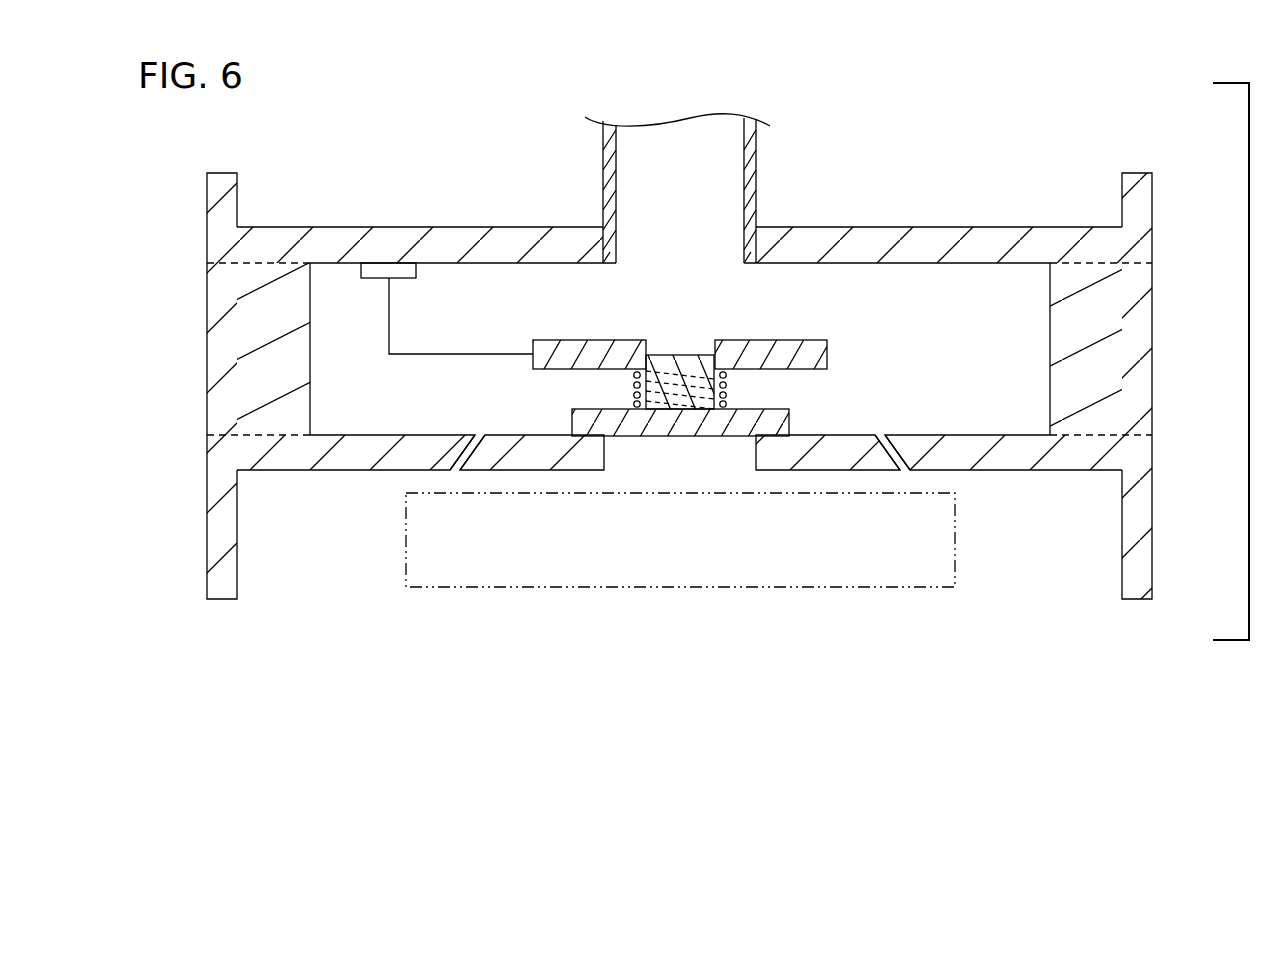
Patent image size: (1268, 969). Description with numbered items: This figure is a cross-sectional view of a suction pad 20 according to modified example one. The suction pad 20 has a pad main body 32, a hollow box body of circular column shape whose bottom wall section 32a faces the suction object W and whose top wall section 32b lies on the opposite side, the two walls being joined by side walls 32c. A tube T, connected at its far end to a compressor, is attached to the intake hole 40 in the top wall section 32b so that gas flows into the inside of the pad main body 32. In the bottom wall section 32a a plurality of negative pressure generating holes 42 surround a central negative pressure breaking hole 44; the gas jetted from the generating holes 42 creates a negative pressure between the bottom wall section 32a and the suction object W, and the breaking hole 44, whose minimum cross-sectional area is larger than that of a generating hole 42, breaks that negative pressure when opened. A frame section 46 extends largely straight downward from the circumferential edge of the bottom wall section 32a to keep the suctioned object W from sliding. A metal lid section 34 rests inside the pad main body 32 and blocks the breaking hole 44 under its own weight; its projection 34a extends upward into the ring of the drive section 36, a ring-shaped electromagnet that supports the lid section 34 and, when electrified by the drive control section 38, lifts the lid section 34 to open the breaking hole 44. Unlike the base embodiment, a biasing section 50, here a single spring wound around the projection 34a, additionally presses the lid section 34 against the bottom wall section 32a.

The suction pad 20 is at (434, 116).
The pad main body 32 is at (868, 212).
The bottom wall section 32a is at (352, 452).
The top wall section 32b is at (383, 240).
The side wall of housing 32c is at (225, 352).
The lid section 34 is at (712, 372).
The projection 34a is at (672, 365).
The drive section 36 is at (825, 351).
The drive control section 38 is at (403, 273).
The intake hole 40 is at (717, 272).
The negative pressure generating hole 42 is at (457, 473).
The negative pressure breaking hole 44 is at (678, 452).
The frame section 46 is at (208, 536).
The biasing section 50 is at (733, 390).
The tube T is at (750, 158).
The suction object W is at (735, 587).